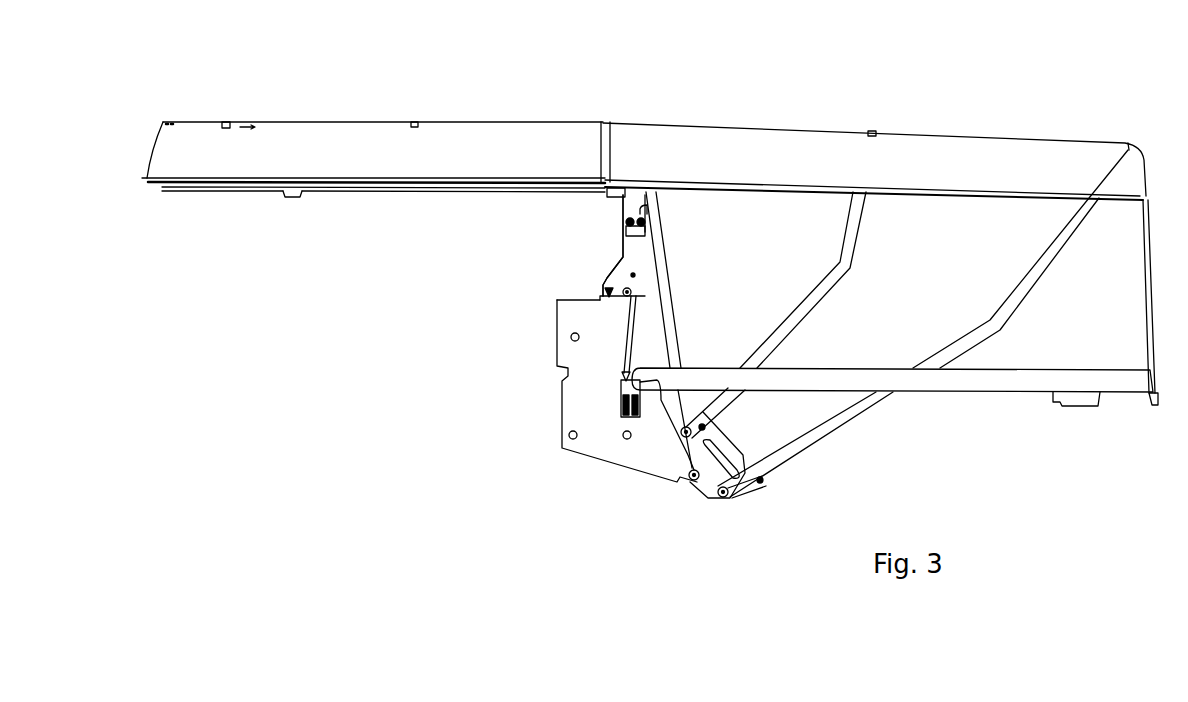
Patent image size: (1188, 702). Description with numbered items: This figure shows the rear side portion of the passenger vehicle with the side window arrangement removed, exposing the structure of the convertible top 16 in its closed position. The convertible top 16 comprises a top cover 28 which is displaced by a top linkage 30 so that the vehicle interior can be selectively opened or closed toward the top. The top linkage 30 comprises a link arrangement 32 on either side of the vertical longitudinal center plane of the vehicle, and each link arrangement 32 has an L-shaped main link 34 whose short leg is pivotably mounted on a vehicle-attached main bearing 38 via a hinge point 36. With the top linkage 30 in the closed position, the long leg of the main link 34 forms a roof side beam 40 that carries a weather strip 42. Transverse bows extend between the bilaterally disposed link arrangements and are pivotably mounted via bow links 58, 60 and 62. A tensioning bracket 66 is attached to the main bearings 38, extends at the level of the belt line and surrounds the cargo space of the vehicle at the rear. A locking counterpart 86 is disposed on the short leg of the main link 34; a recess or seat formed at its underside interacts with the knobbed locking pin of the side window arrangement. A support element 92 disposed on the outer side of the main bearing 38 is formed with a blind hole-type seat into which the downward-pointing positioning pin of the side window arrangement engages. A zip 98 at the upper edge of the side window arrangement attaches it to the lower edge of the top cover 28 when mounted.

The convertible top 16 is at (377, 110).
The top cover 28 is at (792, 137).
The top linkage 30 is at (613, 251).
The link arrangement 32 is at (621, 247).
The main link 34 is at (625, 198).
The hinge point 36 is at (600, 299).
The main bearing 38 is at (585, 402).
The roof side beam 40 is at (400, 191).
The weather strip 42 is at (290, 194).
The bow link 58 is at (665, 313).
The bow link 60 is at (802, 312).
The bow link 62 is at (832, 425).
The tensioning bracket 66 is at (993, 382).
The locking counterpart 86 is at (637, 214).
The support element 92 is at (620, 415).
The zip 98 is at (890, 185).